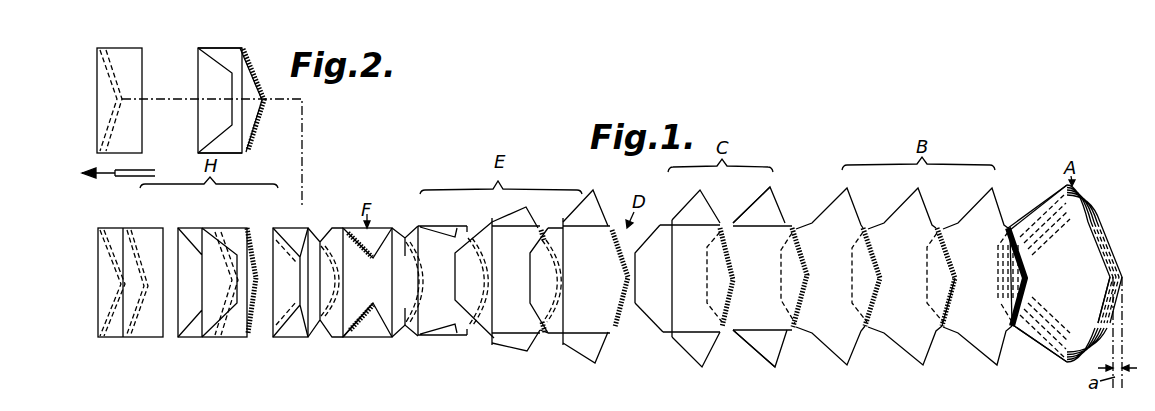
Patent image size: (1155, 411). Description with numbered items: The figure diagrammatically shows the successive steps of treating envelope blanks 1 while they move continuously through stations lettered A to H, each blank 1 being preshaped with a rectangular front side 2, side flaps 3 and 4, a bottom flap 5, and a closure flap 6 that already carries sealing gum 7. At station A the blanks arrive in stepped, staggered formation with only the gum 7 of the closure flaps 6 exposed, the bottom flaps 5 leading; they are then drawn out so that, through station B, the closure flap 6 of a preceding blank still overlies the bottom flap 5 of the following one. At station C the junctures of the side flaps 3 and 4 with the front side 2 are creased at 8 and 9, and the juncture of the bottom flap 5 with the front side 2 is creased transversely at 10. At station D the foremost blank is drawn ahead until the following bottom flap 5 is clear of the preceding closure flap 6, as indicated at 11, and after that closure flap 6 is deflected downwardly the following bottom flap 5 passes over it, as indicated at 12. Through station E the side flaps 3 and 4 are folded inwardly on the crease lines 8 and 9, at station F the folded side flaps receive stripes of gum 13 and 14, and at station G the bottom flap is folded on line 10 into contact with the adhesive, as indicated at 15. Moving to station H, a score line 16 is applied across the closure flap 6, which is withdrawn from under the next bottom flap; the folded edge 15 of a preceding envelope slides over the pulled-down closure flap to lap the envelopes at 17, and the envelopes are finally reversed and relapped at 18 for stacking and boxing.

In FIG. 1, the blank 1 is at (1108, 209).
In FIG. 2, the front side 2 is at (130, 82).
In FIG. 1, the front side 2 is at (1039, 278).
In FIG. 2, the side flap 3 is at (227, 56).
In FIG. 1, the side flap 3 is at (385, 228).
In FIG. 2, the side flap 4 is at (232, 138).
In FIG. 1, the side flap 4 is at (385, 330).
In FIG. 2, the bottom flap 5 is at (210, 73).
In FIG. 1, the bottom flap 5 is at (313, 280).
In FIG. 2, the closure flap 6 is at (120, 95).
In FIG. 1, the closure flap 6 is at (115, 330).
In FIG. 2, the sealing gum 7 is at (258, 120).
In FIG. 1, the sealing gum 7 is at (950, 250).
In FIG. 1, the crease 8 is at (760, 222).
In FIG. 1, the crease 9 is at (765, 332).
In FIG. 1, the transverse crease 10 is at (345, 293).
In FIG. 1, the cleared position 11 is at (632, 278).
In FIG. 1, the overlapped position 12 is at (548, 335).
In FIG. 1, the gum stripe 13 is at (358, 227).
In FIG. 1, the gum stripe 14 is at (358, 337).
In FIG. 1, the folded edge 15 is at (275, 268).
In FIG. 2, the score line 16 is at (240, 127).
In FIG. 1, the score line 16 is at (252, 325).
In FIG. 1, the lapped envelopes 17 is at (203, 228).
In FIG. 1, the relapped envelopes 18 is at (126, 228).